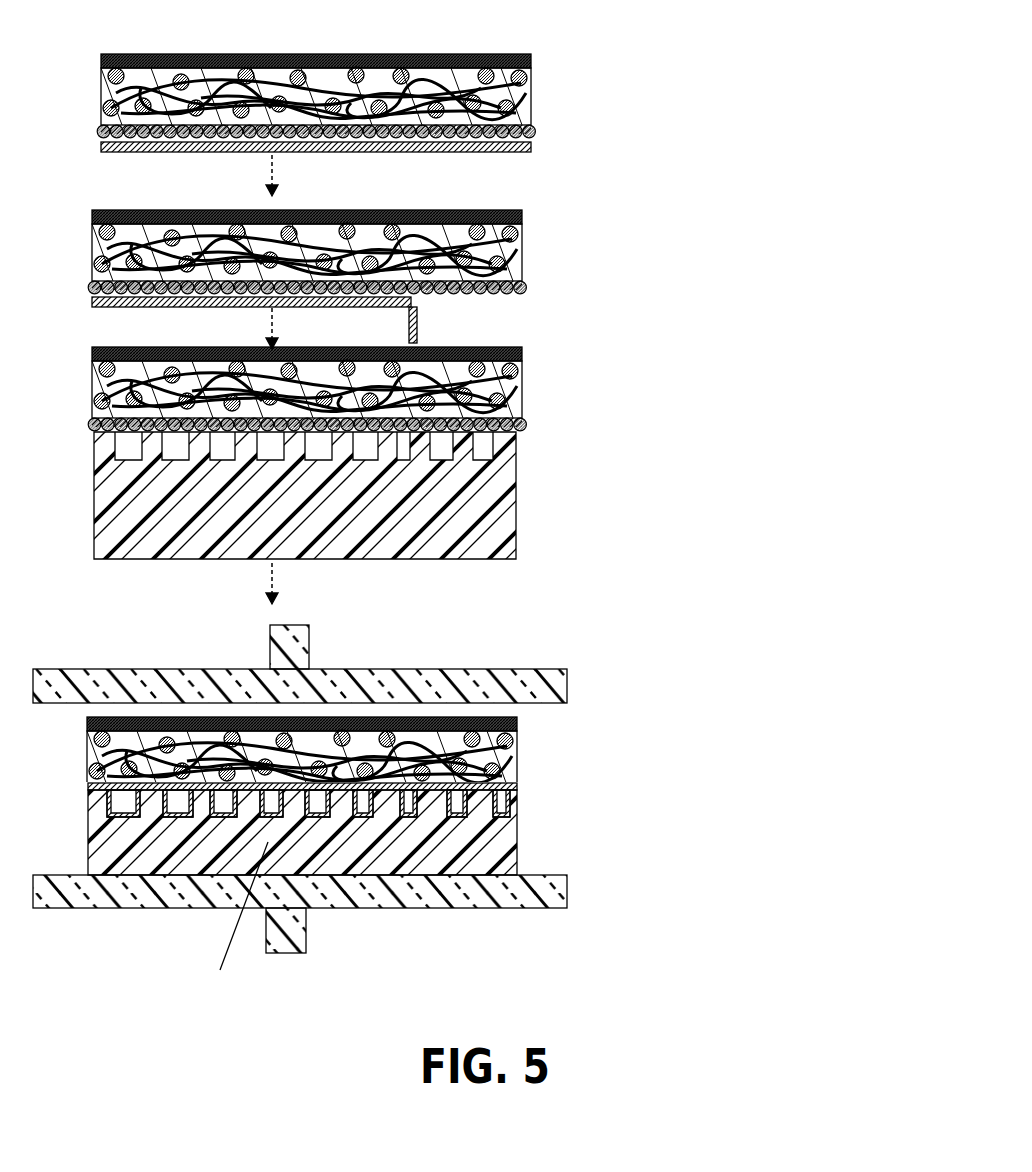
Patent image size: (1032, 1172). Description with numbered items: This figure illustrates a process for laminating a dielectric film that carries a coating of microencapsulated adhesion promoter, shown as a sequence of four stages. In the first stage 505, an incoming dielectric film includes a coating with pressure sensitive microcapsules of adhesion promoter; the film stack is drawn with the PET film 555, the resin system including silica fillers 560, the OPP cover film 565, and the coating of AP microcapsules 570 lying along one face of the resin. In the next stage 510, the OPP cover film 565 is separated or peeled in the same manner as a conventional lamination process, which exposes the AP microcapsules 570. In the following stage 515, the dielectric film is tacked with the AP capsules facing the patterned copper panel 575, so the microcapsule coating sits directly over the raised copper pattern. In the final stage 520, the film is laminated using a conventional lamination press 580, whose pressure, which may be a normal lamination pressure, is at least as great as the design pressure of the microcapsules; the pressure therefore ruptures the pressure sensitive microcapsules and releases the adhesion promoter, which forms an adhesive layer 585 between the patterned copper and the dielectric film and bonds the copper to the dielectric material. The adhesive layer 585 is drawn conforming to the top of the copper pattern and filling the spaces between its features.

The incoming dielectric film step 505 is at (440, 106).
The OPP cover film peel-off step 510 is at (488, 279).
The tacking step 515 is at (499, 475).
The lamination step 520 is at (484, 808).
The PET film 555 is at (101, 60).
The resin system including silica fillers 560 is at (101, 112).
The OPP cover film 565 is at (101, 147).
The AP microcapsule coating 570 is at (97, 131).
The patterned copper panel 575 is at (490, 522).
The lamination press 580 is at (603, 652).
The adhesive layer 585 is at (480, 820).